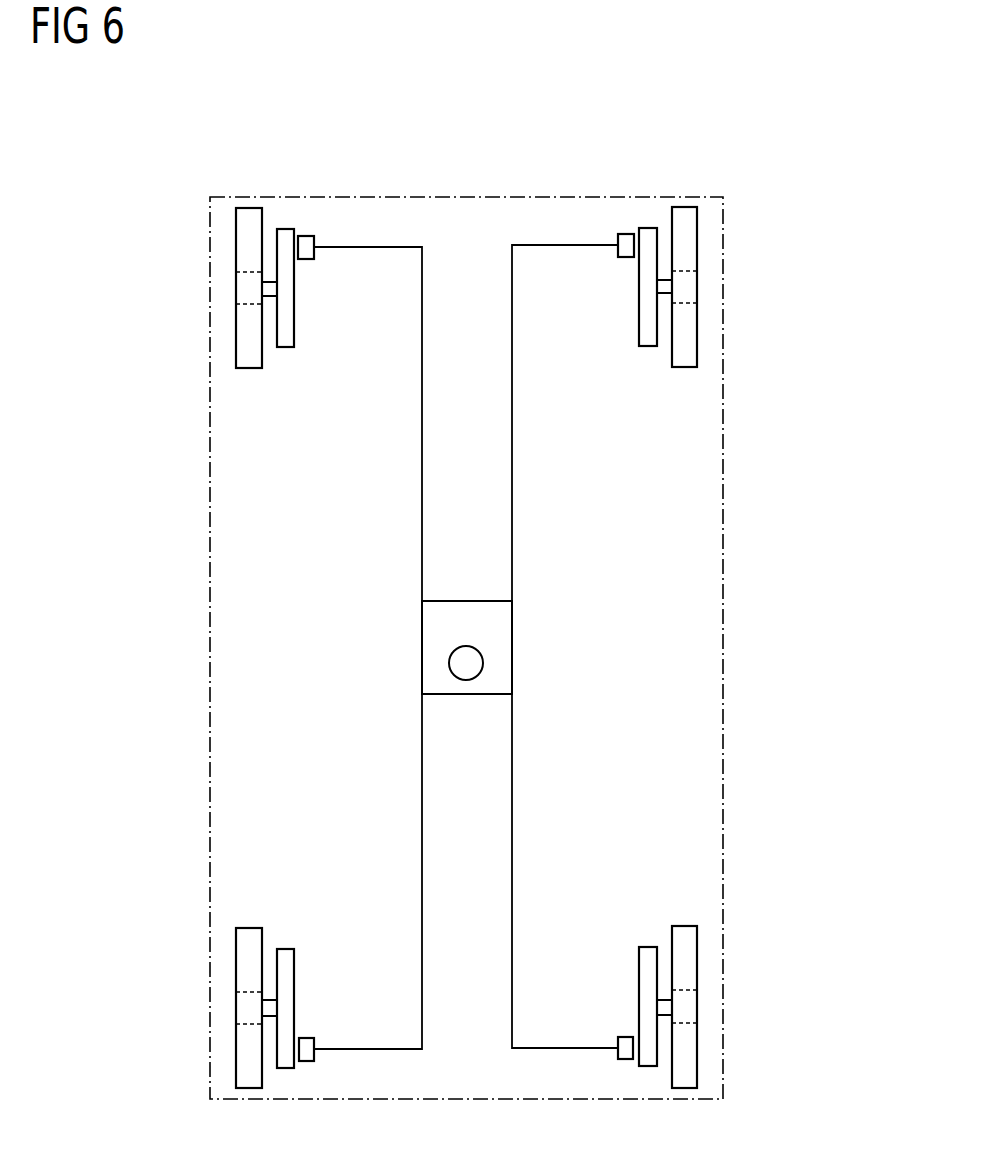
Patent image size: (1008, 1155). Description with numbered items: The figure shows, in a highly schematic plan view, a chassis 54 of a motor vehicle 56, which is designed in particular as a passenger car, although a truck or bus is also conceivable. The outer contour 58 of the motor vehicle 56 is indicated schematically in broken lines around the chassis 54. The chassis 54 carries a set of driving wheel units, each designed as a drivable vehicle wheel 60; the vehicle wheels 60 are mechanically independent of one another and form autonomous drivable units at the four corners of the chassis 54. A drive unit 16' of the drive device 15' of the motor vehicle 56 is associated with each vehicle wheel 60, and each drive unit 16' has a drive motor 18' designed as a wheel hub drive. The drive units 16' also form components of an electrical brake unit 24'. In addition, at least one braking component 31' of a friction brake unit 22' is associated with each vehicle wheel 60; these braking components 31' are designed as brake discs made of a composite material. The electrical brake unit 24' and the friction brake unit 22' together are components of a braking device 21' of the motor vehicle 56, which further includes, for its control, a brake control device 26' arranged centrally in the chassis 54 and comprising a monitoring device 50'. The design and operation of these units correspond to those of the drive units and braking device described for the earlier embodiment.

The drive device 15' is at (540, 648).
The drive unit 16' is at (467, 647).
The drive motor 18' is at (468, 647).
The braking device 21' is at (467, 566).
The friction brake unit 22' is at (466, 602).
The electrical brake unit 24' is at (198, 288).
The brake control device 26' is at (507, 647).
The braking component 31' is at (467, 648).
The monitoring device 50' is at (467, 706).
The chassis 54 is at (685, 190).
The motor vehicle 56 is at (818, 224).
The outer contour 58 is at (723, 603).
The vehicle wheel 60 is at (236, 246).